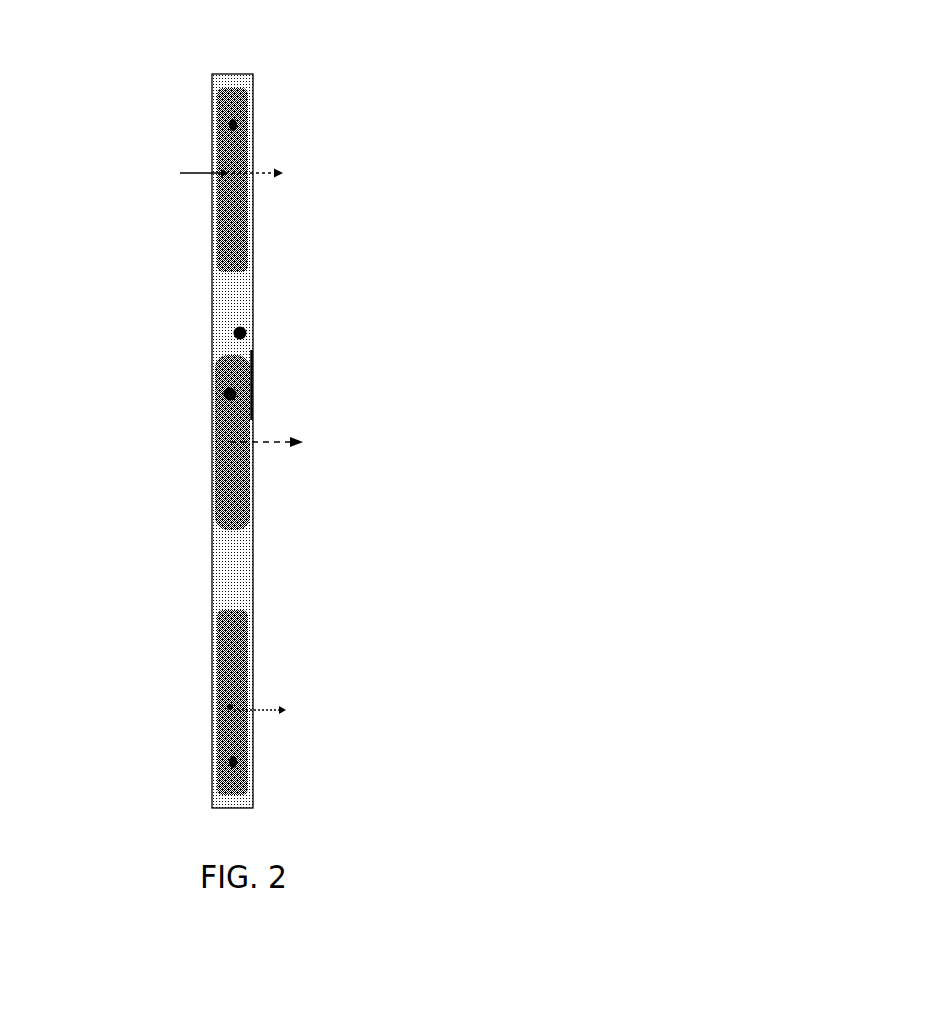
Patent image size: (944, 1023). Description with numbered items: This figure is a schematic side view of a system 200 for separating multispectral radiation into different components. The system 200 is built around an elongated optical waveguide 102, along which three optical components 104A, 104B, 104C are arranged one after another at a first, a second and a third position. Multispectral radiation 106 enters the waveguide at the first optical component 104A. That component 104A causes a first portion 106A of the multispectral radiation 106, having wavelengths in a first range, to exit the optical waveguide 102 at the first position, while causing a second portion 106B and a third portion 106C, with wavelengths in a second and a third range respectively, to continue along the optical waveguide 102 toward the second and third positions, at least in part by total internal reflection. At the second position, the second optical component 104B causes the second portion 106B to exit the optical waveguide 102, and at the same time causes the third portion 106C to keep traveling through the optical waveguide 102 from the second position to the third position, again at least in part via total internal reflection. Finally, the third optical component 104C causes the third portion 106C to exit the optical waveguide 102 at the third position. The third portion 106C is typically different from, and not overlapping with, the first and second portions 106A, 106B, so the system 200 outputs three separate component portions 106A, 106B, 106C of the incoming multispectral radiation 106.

The system 200 is at (316, 420).
The optical waveguide 102 is at (245, 329).
The first optical component 104A is at (235, 122).
The second optical component 104B is at (226, 392).
The third optical component 104C is at (229, 760).
The multispectral radiation 106 is at (173, 175).
The first portion of the multispectral radiation 106A is at (292, 175).
The second portion of the multispectral radiation 106B is at (303, 444).
The third portion of the multispectral radiation 106C is at (290, 707).